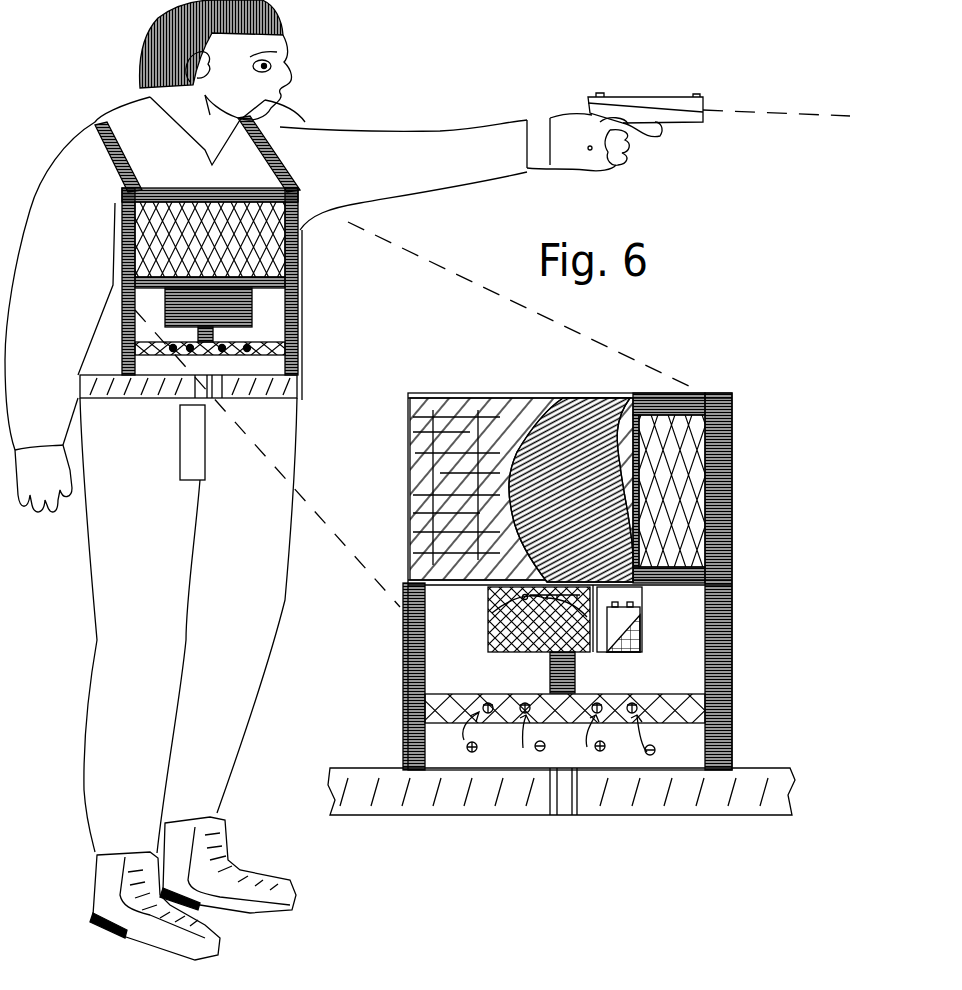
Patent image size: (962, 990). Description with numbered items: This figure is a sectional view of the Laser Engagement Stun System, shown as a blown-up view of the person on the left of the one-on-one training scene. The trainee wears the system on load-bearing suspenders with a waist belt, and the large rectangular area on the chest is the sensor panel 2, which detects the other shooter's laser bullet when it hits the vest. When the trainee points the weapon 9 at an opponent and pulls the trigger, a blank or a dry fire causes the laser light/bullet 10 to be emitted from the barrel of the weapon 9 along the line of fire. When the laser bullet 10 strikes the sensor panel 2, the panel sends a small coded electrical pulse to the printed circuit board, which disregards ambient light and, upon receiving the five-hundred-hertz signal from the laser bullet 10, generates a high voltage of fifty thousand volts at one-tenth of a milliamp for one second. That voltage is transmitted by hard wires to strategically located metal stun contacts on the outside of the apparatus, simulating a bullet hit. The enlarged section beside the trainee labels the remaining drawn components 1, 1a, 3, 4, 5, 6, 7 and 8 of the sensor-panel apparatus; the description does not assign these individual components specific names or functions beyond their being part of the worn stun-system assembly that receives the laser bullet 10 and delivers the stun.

The target frame 1 is at (734, 748).
The base slab 1a is at (714, 822).
The sensor panel 2 is at (440, 462).
The deformable absorbing material 3 is at (576, 420).
The mesh panel 4 is at (700, 462).
The sensor housing 5 is at (497, 618).
The electronics unit 6 is at (628, 620).
The support post 7 is at (547, 667).
The sensor band 8 is at (507, 728).
The weapon 9 is at (641, 83).
The laser light/bullet 10 is at (821, 101).